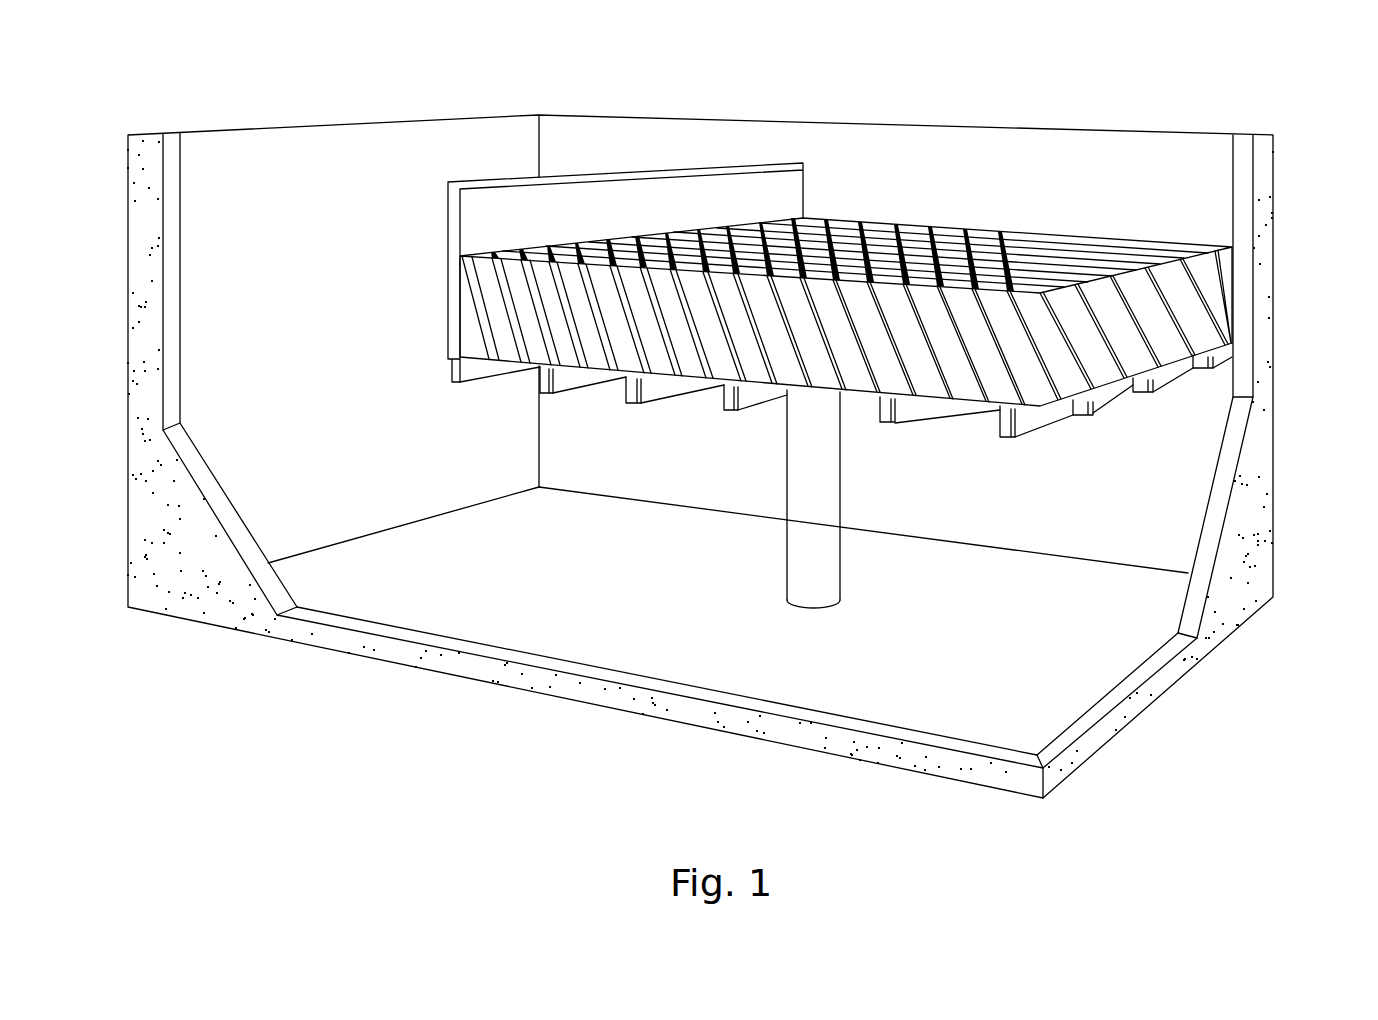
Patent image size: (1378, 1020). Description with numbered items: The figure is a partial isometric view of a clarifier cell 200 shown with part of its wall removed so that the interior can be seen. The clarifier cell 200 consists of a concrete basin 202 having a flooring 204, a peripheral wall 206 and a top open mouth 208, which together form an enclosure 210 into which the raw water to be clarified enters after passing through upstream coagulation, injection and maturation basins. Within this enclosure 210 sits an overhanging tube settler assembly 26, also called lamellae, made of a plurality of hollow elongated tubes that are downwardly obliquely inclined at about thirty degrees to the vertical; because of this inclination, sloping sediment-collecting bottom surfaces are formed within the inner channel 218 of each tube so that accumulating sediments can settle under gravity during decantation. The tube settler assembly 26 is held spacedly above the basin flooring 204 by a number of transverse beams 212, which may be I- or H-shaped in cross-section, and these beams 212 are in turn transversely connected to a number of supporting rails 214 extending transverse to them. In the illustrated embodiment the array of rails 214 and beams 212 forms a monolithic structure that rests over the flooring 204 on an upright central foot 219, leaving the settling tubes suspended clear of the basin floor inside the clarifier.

The clarifier cell 200 is at (278, 117).
The concrete basin 202 is at (201, 586).
The flooring 204 is at (623, 645).
The peripheral wall 206 is at (302, 400).
The top open mouth 208 is at (1260, 147).
The enclosure 210 is at (1018, 174).
The tube settler assembly 26 is at (1170, 282).
The transverse beams 212 is at (1147, 388).
The supporting rails 214 is at (658, 390).
The inner channel 218 is at (837, 373).
The upright central foot 219 is at (805, 563).